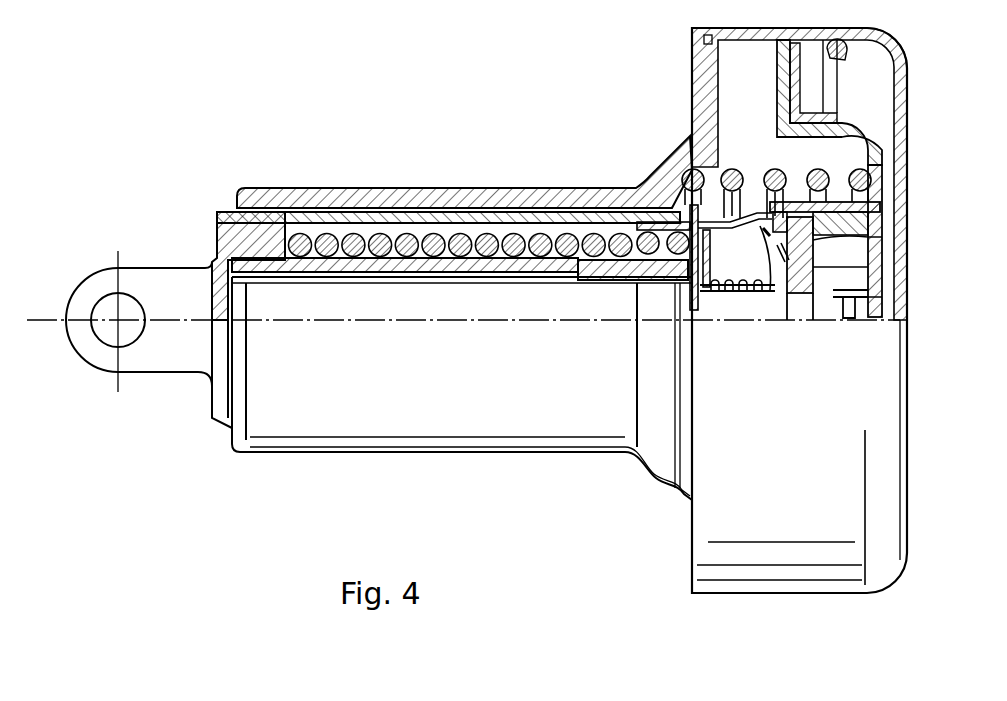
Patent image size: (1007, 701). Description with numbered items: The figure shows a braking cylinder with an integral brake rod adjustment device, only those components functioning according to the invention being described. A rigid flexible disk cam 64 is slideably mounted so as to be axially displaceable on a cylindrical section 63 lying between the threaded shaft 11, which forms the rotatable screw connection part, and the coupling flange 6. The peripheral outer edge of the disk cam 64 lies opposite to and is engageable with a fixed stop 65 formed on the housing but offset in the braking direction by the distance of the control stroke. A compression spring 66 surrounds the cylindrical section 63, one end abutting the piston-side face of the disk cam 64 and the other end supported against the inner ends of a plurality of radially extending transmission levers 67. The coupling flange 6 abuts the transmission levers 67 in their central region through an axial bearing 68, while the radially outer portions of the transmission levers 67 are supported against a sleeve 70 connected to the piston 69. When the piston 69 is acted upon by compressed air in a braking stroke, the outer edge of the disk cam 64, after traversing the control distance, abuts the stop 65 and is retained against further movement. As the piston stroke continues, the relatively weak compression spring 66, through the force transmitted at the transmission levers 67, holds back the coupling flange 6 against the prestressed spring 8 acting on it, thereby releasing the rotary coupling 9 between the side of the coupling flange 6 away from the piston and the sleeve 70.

The coupling flange 6 is at (813, 280).
The prestressed spring 8 is at (430, 243).
The rotary coupling 9 is at (884, 238).
The threaded spindle shaft 11 is at (583, 283).
The cylindrical section 63 is at (802, 303).
The disk cam 64 is at (692, 146).
The fixed stop 65 is at (680, 192).
The compression spring 66 is at (712, 300).
The transmission levers 67 is at (768, 300).
The axial bearing 68 is at (878, 260).
The piston 69 is at (877, 143).
The sleeve 70 is at (880, 200).